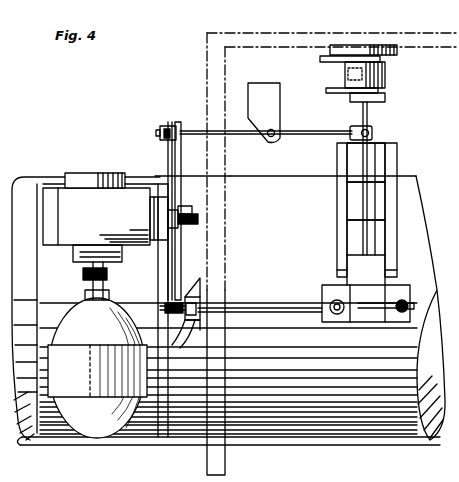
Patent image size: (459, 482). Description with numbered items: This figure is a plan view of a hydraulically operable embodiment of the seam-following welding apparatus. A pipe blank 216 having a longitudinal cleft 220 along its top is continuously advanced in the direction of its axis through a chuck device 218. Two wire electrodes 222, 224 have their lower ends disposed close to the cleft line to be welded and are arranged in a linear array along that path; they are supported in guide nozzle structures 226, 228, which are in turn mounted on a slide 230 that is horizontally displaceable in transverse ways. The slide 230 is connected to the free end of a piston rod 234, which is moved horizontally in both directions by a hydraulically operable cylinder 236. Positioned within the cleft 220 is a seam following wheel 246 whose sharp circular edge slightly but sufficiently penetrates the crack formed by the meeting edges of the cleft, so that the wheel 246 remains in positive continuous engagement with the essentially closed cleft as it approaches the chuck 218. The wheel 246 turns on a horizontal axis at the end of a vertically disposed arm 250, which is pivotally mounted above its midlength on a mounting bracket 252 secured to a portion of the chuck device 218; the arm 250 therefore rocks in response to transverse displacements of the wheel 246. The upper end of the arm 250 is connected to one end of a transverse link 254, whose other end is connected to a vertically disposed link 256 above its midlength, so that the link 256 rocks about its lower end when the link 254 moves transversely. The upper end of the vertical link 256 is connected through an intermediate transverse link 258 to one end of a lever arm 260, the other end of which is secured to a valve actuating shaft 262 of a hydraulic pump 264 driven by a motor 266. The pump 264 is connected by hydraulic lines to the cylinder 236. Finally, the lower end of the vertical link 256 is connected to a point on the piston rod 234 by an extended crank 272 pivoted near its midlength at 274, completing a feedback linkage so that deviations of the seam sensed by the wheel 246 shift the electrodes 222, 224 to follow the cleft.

The pipe blank 216 is at (297, 437).
The chuck device 218 is at (226, 473).
The longitudinal cleft 220 is at (245, 310).
The wire electrode 222 is at (337, 314).
The wire electrode 224 is at (372, 310).
The guide nozzle structure 226 is at (322, 318).
The guide nozzle structure 228 is at (402, 313).
The slide 230 is at (380, 268).
The piston rod 234 is at (372, 118).
The hydraulically operable cylinder 236 is at (385, 82).
The seam following wheel 246 is at (169, 330).
The arm 250 is at (198, 348).
The mounting bracket 252 is at (197, 290).
The transverse link 254 is at (162, 270).
The vertical link 256 is at (172, 121).
The intermediate transverse link 258 is at (168, 150).
The lever arm 260 is at (192, 207).
The valve actuating shaft 262 is at (198, 219).
The hydraulic pump 264 is at (70, 192).
The motor 266 is at (97, 350).
The extended crank 272 is at (304, 134).
The pivot 274 is at (278, 108).